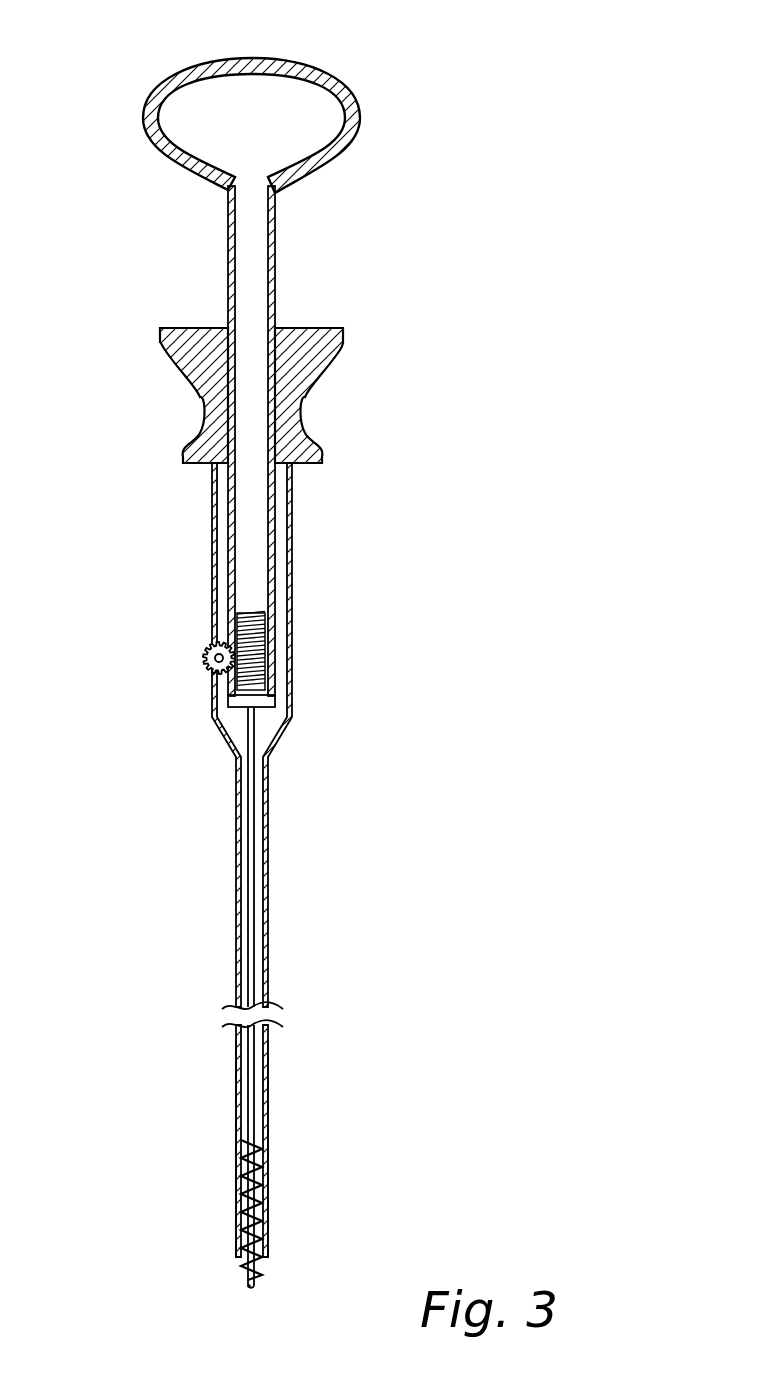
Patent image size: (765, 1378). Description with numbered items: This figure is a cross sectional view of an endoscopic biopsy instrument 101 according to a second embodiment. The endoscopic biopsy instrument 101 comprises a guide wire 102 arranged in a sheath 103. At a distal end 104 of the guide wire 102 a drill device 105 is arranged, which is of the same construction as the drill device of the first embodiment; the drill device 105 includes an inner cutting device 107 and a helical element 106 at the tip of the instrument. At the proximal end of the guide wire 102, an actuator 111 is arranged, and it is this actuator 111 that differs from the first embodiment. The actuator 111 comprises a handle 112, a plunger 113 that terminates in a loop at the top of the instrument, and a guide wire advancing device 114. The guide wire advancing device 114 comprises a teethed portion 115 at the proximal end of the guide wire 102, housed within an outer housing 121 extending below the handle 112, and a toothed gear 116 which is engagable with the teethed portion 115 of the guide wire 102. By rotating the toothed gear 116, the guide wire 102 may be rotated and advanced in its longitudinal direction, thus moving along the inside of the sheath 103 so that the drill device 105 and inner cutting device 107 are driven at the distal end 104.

The endoscopic biopsy instrument 101 is at (478, 72).
The actuator 111 is at (378, 182).
The plunger 113 is at (340, 66).
The handle 112 is at (325, 343).
The guide wire advancing device 114 is at (170, 497).
The outer housing 121 is at (300, 552).
The teethed portion 115 is at (265, 652).
The toothed gear 116 is at (202, 654).
The drill device 105 is at (221, 1200).
The sheath 103 is at (268, 1097).
The distal end 104 is at (250, 1119).
The guide wire 102 is at (265, 1137).
The helical coil 106 is at (268, 1193).
The inner cutting device 107 is at (255, 1268).